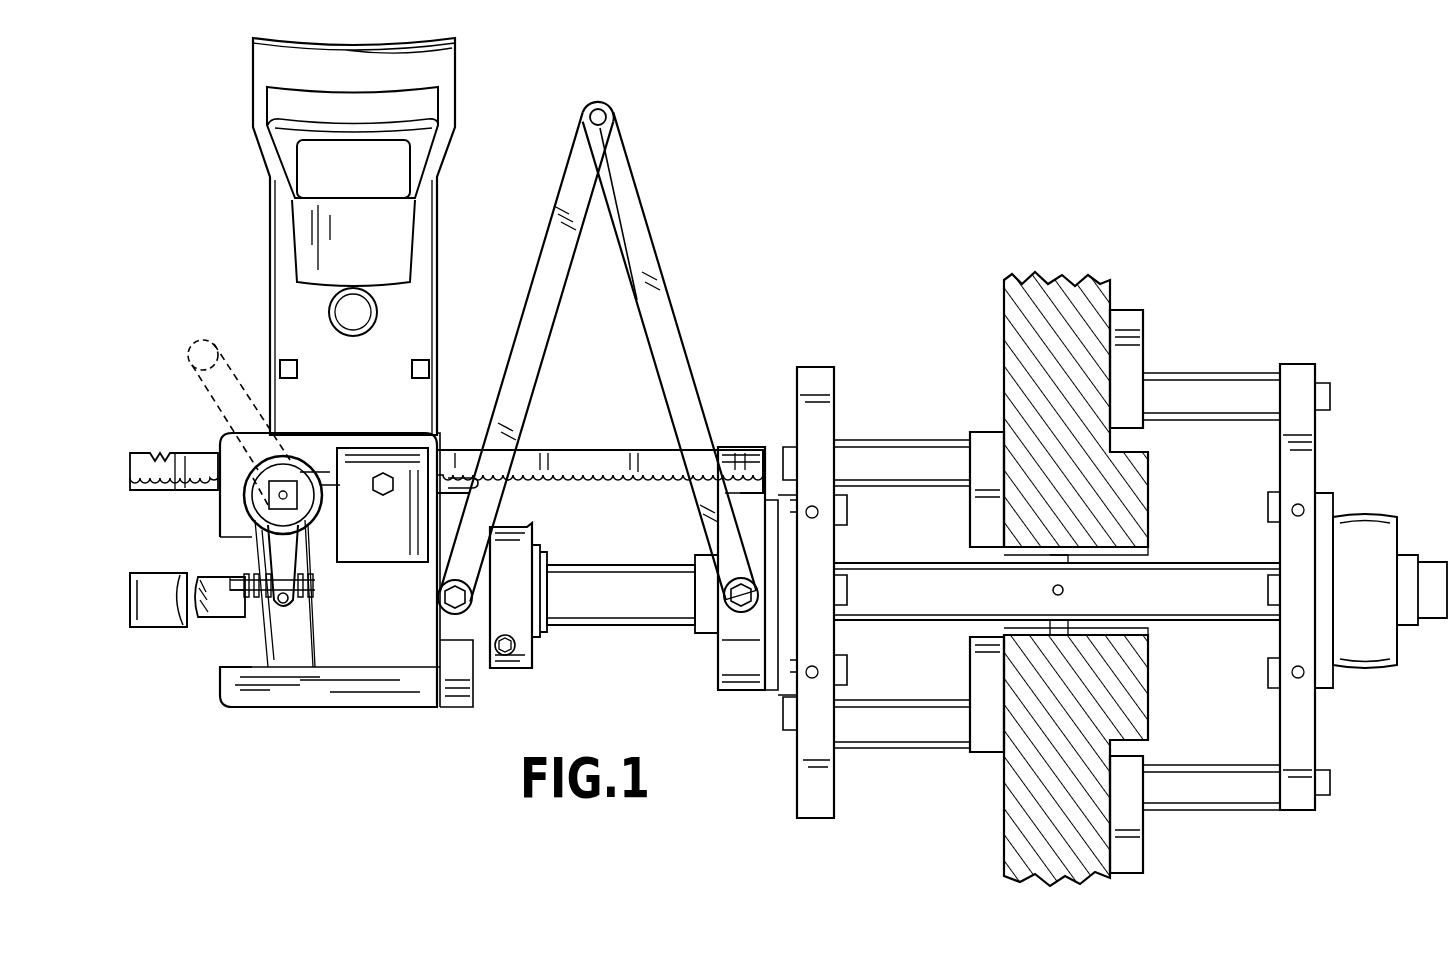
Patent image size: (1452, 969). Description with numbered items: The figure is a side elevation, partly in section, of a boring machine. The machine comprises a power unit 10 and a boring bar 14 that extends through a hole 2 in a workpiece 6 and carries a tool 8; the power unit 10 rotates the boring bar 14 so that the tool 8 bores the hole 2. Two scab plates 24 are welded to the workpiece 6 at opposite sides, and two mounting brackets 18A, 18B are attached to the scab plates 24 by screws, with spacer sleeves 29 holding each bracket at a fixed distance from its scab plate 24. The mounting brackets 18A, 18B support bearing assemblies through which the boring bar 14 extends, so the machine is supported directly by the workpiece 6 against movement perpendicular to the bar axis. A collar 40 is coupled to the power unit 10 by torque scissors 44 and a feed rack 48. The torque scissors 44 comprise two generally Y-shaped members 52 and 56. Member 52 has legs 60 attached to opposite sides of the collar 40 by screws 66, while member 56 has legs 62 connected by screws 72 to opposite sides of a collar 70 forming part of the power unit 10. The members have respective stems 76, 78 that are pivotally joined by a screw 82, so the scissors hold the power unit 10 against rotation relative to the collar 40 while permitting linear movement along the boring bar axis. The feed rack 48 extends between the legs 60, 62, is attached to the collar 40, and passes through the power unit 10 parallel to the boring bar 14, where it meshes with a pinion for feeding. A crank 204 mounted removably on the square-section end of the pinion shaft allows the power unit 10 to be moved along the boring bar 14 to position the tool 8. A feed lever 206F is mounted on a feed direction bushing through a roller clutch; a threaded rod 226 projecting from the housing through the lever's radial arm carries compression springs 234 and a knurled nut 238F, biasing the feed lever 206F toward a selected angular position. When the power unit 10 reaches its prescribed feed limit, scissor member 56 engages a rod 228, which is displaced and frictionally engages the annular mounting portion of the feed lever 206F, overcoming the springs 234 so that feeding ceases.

The hole 2 is at (1120, 633).
The workpiece 6 is at (1062, 280).
The tool 8 is at (1075, 632).
The power unit 10 is at (248, 298).
The boring bar 14 is at (645, 625).
The mounting bracket 18A is at (815, 367).
The mounting bracket 18B is at (1297, 364).
The scab plate 24 is at (988, 432).
The spacer sleeve 29 is at (905, 438).
The collar 40 is at (760, 695).
The torque scissors 44 is at (645, 191).
The feed rack 48 is at (620, 447).
The Y-shaped member 52 is at (685, 332).
The Y-shaped member 56 is at (530, 308).
The legs 60 is at (700, 540).
The legs 62 is at (522, 312).
The screw 66 is at (735, 612).
The collar 70 is at (475, 695).
The screw 72 is at (460, 615).
The stem 76 is at (664, 262).
The stem 78 is at (548, 228).
The screw 82 is at (612, 113).
The crank 204 is at (215, 345).
The feed lever 206F is at (292, 548).
The threaded rod 226 is at (216, 612).
The rod 228 is at (452, 470).
The compression spring 234 is at (296, 590).
The knurled nut 238F is at (245, 575).